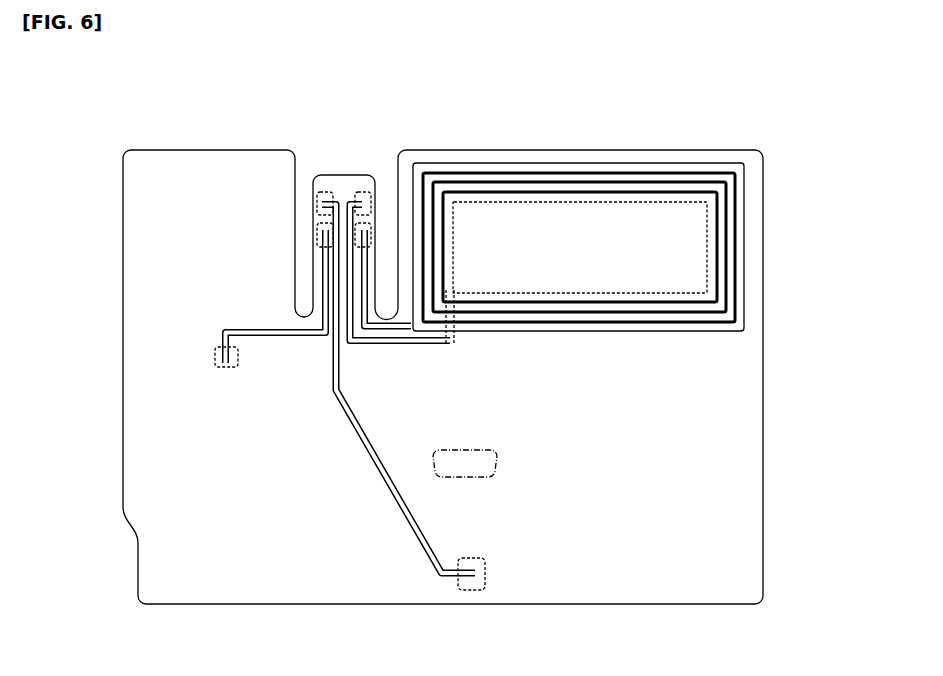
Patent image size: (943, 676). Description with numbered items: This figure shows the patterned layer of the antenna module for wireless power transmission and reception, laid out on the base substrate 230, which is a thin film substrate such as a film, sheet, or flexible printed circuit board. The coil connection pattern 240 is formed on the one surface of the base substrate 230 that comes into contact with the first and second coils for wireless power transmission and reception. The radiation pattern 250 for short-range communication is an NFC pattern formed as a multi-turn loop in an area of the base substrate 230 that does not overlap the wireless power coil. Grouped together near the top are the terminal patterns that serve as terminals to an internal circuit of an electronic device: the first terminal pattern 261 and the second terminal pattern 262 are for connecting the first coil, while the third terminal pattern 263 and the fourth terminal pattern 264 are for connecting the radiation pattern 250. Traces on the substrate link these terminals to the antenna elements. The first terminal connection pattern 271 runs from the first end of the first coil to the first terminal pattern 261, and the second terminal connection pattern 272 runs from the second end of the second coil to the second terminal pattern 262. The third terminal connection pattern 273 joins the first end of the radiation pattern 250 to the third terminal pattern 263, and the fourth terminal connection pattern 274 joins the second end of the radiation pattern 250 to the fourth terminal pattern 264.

The base substrate 230 is at (497, 465).
The coil connection pattern 240 is at (763, 393).
The radiation pattern for short-range communication 250 is at (744, 239).
The first terminal pattern 261 is at (322, 192).
The second terminal pattern 262 is at (319, 230).
The third terminal pattern 263 is at (364, 192).
The fourth terminal pattern 264 is at (369, 236).
The first terminal connection pattern 271 is at (432, 562).
The second terminal connection pattern 272 is at (215, 357).
The third terminal connection pattern 273 is at (348, 197).
The fourth terminal connection pattern 274 is at (358, 272).